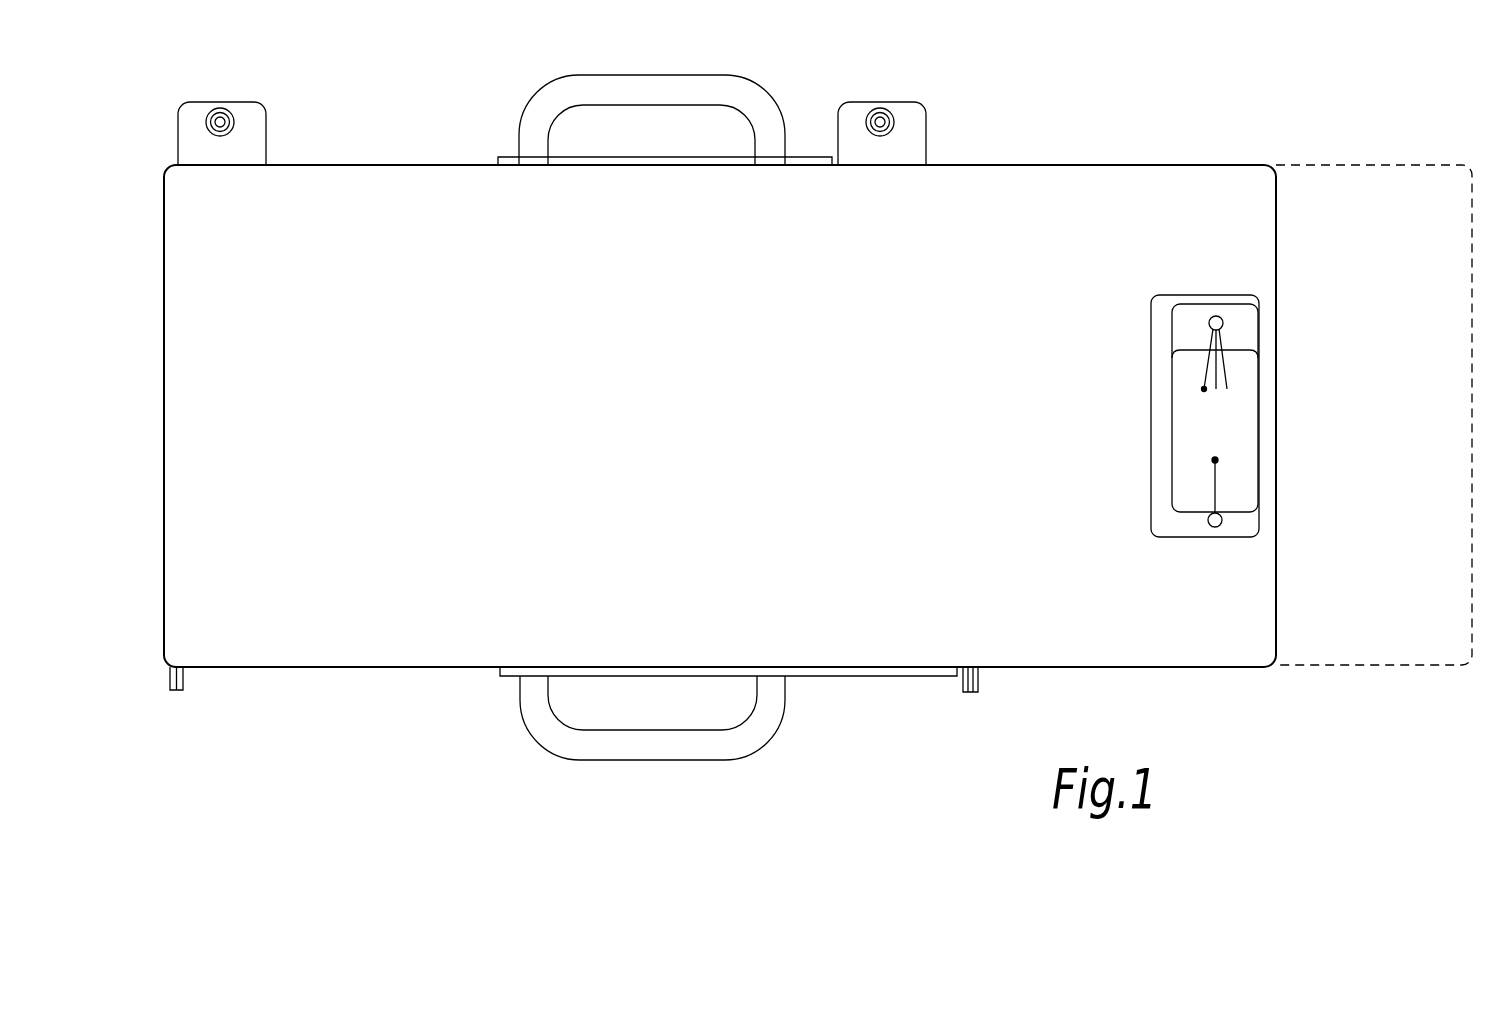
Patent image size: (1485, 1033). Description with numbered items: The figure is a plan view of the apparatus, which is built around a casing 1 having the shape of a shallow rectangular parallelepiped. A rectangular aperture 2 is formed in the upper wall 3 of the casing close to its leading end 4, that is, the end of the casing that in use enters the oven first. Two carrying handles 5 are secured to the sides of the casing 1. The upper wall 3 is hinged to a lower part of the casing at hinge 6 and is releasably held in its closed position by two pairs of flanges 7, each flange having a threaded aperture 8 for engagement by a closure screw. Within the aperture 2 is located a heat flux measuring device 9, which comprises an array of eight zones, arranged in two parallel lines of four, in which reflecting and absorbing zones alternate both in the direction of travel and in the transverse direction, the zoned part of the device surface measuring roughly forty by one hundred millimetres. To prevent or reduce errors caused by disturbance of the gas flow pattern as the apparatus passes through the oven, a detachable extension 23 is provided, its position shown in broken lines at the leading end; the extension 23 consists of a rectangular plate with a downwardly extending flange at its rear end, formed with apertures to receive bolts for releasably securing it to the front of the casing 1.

The casing 1 is at (1110, 156).
The rectangular aperture 2 is at (1205, 442).
The upper wall 3 is at (703, 426).
The leading end 4 is at (1278, 270).
The carrying handle 5 is at (716, 92).
The hinge 6 is at (169, 682).
The flange 7 is at (262, 118).
The threaded aperture 8 is at (220, 110).
The heat flux measuring device 9 is at (1226, 422).
The detachable extension 23 is at (1362, 667).